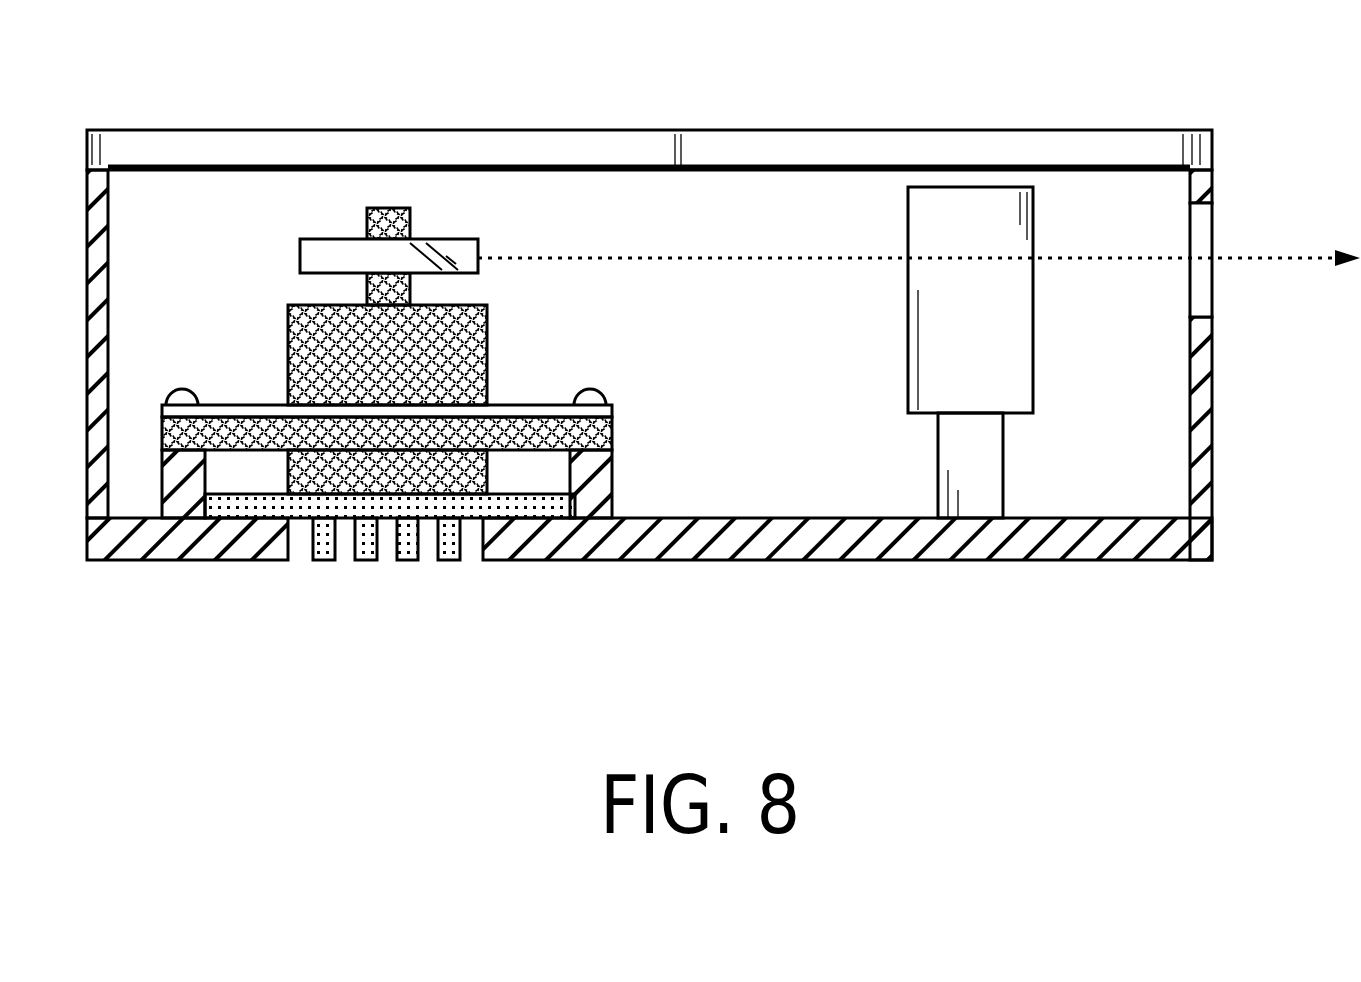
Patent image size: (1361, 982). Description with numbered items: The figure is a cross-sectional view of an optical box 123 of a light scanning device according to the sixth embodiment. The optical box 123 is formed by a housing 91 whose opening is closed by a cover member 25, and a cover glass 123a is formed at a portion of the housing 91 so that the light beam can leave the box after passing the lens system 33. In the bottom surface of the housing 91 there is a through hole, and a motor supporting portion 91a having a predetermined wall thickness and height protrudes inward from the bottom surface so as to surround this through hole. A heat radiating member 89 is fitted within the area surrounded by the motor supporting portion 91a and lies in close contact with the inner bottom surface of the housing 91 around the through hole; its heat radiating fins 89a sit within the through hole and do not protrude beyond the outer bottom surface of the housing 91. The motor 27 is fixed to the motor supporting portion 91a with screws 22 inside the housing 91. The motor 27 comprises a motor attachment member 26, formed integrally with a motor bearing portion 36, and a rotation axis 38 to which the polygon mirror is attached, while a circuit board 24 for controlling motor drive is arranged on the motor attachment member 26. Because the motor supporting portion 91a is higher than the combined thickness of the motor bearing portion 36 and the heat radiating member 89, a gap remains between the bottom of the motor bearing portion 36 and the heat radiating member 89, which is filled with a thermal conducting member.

The screws 22 is at (182, 388).
The circuit board 24 is at (245, 412).
The cover member 25 is at (717, 150).
The motor attachment member 26 is at (493, 427).
The motor 27 is at (504, 340).
The lens system 33 is at (1018, 352).
The motor bearing portion 36 is at (317, 494).
The rotation axis 38 is at (367, 228).
The heat radiating member 89 is at (428, 588).
The heat radiating fins 89a is at (362, 555).
The housing 91 is at (1055, 562).
The motor supporting portion 91a is at (597, 474).
The optical box 123 is at (721, 344).
The cover glass 123a is at (1200, 288).